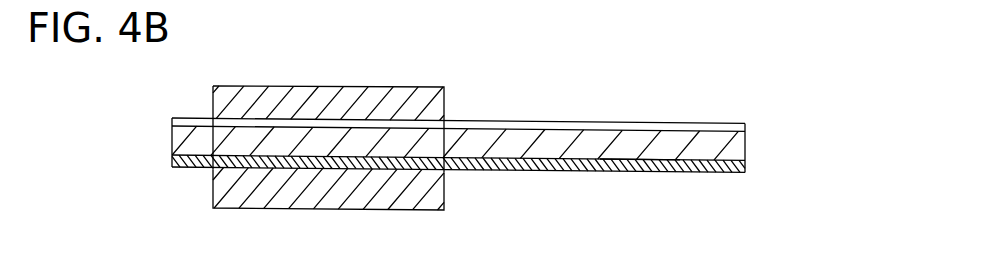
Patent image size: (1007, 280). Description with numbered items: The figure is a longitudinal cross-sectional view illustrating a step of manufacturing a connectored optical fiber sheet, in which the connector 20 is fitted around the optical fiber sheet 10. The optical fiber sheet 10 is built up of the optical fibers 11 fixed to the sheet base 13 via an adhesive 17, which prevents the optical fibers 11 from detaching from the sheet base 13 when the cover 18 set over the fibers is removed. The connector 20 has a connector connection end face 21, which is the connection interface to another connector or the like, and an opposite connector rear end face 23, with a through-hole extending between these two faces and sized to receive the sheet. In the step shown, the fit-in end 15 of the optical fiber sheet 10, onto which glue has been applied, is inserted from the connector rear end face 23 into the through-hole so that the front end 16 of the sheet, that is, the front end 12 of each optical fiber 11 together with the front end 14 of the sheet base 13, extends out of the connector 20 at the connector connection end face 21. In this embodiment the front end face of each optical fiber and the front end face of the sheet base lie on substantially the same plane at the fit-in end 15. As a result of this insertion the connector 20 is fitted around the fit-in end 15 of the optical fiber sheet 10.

The optical fiber sheet 10 is at (522, 145).
The optical fibers 11 is at (745, 147).
The sheet base 13 is at (628, 181).
The cover 18 is at (745, 124).
The front end 16 is at (248, 149).
The front end 12 is at (182, 138).
The front end 14 is at (180, 160).
The connector 20 is at (385, 94).
The fit-in end 15 is at (322, 112).
The connector connection end face 21 is at (213, 190).
The connector rear end face 23 is at (444, 200).
The adhesive 17 is at (632, 157).